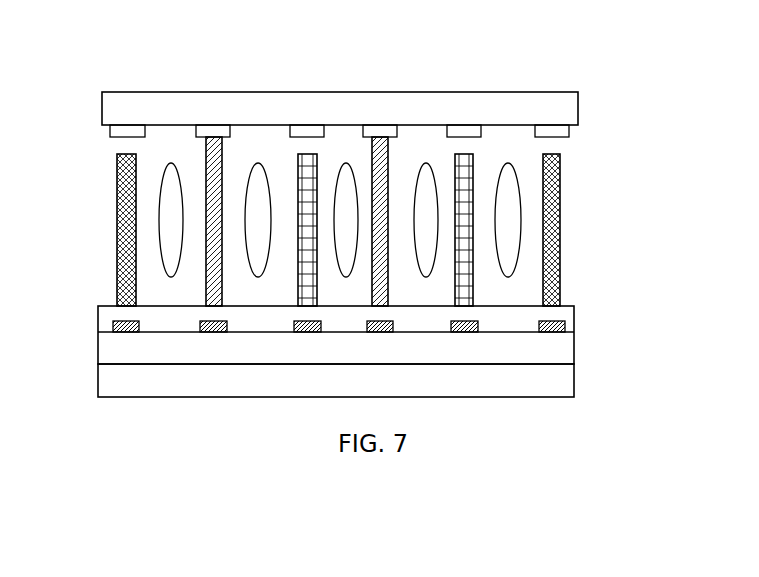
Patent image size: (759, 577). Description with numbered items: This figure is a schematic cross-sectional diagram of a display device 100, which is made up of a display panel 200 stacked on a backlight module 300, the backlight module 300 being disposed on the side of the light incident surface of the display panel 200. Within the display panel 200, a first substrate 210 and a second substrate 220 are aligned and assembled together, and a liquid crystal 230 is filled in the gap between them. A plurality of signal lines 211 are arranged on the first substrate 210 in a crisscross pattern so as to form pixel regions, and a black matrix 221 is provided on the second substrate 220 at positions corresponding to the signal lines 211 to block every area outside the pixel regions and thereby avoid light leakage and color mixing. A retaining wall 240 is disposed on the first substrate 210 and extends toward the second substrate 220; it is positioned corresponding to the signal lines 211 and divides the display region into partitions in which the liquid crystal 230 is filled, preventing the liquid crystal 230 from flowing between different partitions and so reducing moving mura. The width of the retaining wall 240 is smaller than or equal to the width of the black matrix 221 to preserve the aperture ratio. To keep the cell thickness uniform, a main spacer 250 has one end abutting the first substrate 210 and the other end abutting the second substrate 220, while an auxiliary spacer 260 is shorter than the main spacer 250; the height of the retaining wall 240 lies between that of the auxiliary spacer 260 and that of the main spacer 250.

The display device 100 is at (103, 47).
The display panel 200 is at (648, 113).
The first substrate 210 is at (550, 350).
The signal lines 211 is at (567, 322).
The second substrate 220 is at (558, 108).
The black matrix 221 is at (560, 128).
The liquid crystal 230 is at (506, 220).
The retaining wall 240 is at (562, 193).
The main spacer 250 is at (210, 185).
The auxiliary spacer 260 is at (472, 285).
The backlight module 300 is at (552, 384).